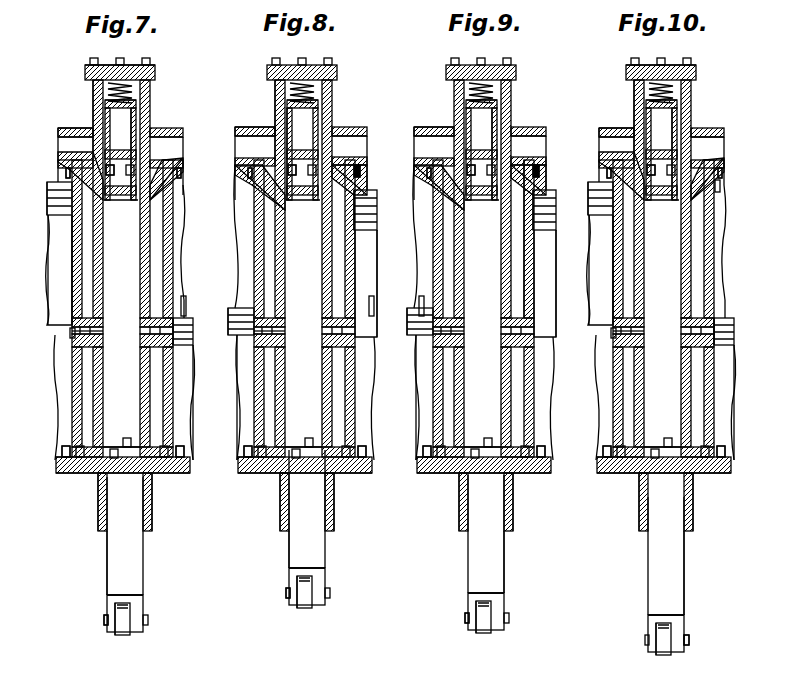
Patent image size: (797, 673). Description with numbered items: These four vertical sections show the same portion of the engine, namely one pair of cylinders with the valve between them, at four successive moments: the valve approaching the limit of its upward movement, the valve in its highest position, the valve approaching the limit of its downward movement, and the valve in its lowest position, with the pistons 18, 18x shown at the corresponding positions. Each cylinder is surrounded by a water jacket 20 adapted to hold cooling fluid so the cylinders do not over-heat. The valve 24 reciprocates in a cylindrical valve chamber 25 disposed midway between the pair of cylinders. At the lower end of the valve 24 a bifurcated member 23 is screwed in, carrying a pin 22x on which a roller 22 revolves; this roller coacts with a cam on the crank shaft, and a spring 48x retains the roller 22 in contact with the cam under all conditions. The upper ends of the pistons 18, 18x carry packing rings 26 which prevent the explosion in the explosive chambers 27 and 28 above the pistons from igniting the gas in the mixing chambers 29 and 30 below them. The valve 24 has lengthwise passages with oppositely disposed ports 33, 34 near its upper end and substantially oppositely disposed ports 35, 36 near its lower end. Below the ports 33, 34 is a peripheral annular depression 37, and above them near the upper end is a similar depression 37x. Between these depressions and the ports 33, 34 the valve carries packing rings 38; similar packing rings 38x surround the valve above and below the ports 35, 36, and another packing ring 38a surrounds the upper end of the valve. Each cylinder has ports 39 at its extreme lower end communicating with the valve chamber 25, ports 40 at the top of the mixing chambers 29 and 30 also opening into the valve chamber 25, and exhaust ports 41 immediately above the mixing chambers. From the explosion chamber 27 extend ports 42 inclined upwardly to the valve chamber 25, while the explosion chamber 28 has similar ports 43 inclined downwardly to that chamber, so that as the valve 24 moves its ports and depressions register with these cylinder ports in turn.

In FIG. 7, the piston 18 is at (50, 268).
In FIG. 8, the piston 18 is at (237, 432).
In FIG. 9, the piston 18 is at (556, 264).
In FIG. 10, the piston 18 is at (592, 262).
In FIG. 7, the piston 18x is at (192, 416).
In FIG. 8, the piston 18x is at (377, 240).
In FIG. 9, the piston 18x is at (556, 238).
In FIG. 10, the piston 18x is at (735, 370).
In FIG. 7, the water jacket 20 is at (60, 142).
In FIG. 8, the water jacket 20 is at (232, 144).
In FIG. 9, the water jacket 20 is at (540, 144).
In FIG. 10, the water jacket 20 is at (597, 142).
In FIG. 7, the roller 22 is at (130, 638).
In FIG. 8, the roller 22 is at (312, 608).
In FIG. 9, the roller 22 is at (492, 635).
In FIG. 10, the roller 22 is at (657, 633).
In FIG. 7, the pin 22x is at (103, 620).
In FIG. 8, the pin 22x is at (285, 593).
In FIG. 9, the pin 22x is at (463, 605).
In FIG. 10, the pin 22x is at (689, 641).
In FIG. 7, the bifurcated member 23 is at (182, 190).
In FIG. 8, the bifurcated member 23 is at (325, 578).
In FIG. 9, the bifurcated member 23 is at (504, 607).
In FIG. 10, the bifurcated member 23 is at (684, 622).
In FIG. 7, the valve 24 is at (107, 571).
In FIG. 8, the valve 24 is at (289, 554).
In FIG. 9, the valve 24 is at (504, 562).
In FIG. 10, the valve 24 is at (684, 565).
In FIG. 7, the cylindrical valve chamber 25 is at (95, 90).
In FIG. 8, the cylindrical valve chamber 25 is at (275, 82).
In FIG. 9, the cylindrical valve chamber 25 is at (525, 420).
In FIG. 10, the cylindrical valve chamber 25 is at (632, 86).
In FIG. 7, the packing rings 26 is at (47, 200).
In FIG. 8, the packing rings 26 is at (378, 208).
In FIG. 9, the packing rings 26 is at (410, 338).
In FIG. 10, the packing rings 26 is at (588, 200).
In FIG. 7, the explosive chamber 27 is at (58, 172).
In FIG. 8, the explosive chamber 27 is at (235, 190).
In FIG. 9, the explosive chamber 27 is at (420, 190).
In FIG. 10, the explosive chamber 27 is at (600, 176).
In FIG. 7, the explosive chamber 28 is at (182, 172).
In FIG. 8, the explosive chamber 28 is at (232, 168).
In FIG. 9, the explosive chamber 28 is at (540, 168).
In FIG. 10, the explosive chamber 28 is at (598, 168).
In FIG. 7, the mixing chamber 29 is at (58, 442).
In FIG. 8, the mixing chamber 29 is at (240, 468).
In FIG. 9, the mixing chamber 29 is at (551, 450).
In FIG. 10, the mixing chamber 29 is at (600, 442).
In FIG. 7, the mixing chamber 30 is at (188, 470).
In FIG. 8, the mixing chamber 30 is at (362, 420).
In FIG. 9, the mixing chamber 30 is at (543, 412).
In FIG. 10, the mixing chamber 30 is at (732, 460).
In FIG. 7, the port 33 is at (62, 228).
In FIG. 8, the port 33 is at (282, 150).
In FIG. 9, the port 33 is at (462, 148).
In FIG. 10, the port 33 is at (615, 228).
In FIG. 7, the port 34 is at (160, 148).
In FIG. 8, the port 34 is at (330, 140).
In FIG. 9, the port 34 is at (508, 140).
In FIG. 10, the port 34 is at (720, 200).
In FIG. 7, the port 35 is at (98, 478).
In FIG. 8, the port 35 is at (280, 478).
In FIG. 9, the port 35 is at (459, 478).
In FIG. 10, the port 35 is at (639, 478).
In FIG. 7, the port 36 is at (152, 490).
In FIG. 8, the port 36 is at (357, 448).
In FIG. 9, the port 36 is at (513, 472).
In FIG. 10, the port 36 is at (693, 485).
In FIG. 7, the peripheral annular depression 37 is at (120, 225).
In FIG. 8, the peripheral annular depression 37 is at (302, 200).
In FIG. 9, the peripheral annular depression 37 is at (481, 220).
In FIG. 10, the peripheral annular depression 37 is at (661, 245).
In FIG. 7, the peripheral annular depression 37x is at (150, 115).
In FIG. 8, the peripheral annular depression 37x is at (282, 105).
In FIG. 9, the peripheral annular depression 37x is at (505, 115).
In FIG. 10, the peripheral annular depression 37x is at (680, 135).
In FIG. 7, the packing rings 38 is at (126, 128).
In FIG. 8, the packing rings 38 is at (330, 110).
In FIG. 9, the packing rings 38 is at (484, 150).
In FIG. 10, the packing rings 38 is at (662, 185).
In FIG. 7, the packing ring 38a is at (135, 105).
In FIG. 8, the packing ring 38a is at (312, 70).
In FIG. 9, the packing ring 38a is at (462, 105).
In FIG. 10, the packing ring 38a is at (680, 120).
In FIG. 7, the packing rings 38x is at (126, 446).
In FIG. 8, the packing rings 38x is at (298, 445).
In FIG. 9, the packing rings 38x is at (484, 445).
In FIG. 10, the packing rings 38x is at (664, 445).
In FIG. 7, the ports 39 is at (60, 466).
In FIG. 8, the ports 39 is at (268, 468).
In FIG. 9, the ports 39 is at (448, 468).
In FIG. 10, the ports 39 is at (603, 460).
In FIG. 7, the ports 40 is at (60, 345).
In FIG. 8, the ports 40 is at (325, 345).
In FIG. 9, the ports 40 is at (505, 345).
In FIG. 10, the ports 40 is at (680, 337).
In FIG. 7, the exhaust ports 41 is at (188, 302).
In FIG. 8, the exhaust ports 41 is at (375, 302).
In FIG. 9, the exhaust ports 41 is at (418, 300).
In FIG. 7, the ports 42 is at (82, 128).
In FIG. 8, the ports 42 is at (258, 127).
In FIG. 9, the ports 42 is at (428, 128).
In FIG. 10, the ports 42 is at (628, 128).
In FIG. 8, the ports 43 is at (360, 180).
In FIG. 9, the ports 43 is at (525, 145).
In FIG. 10, the ports 43 is at (718, 192).
In FIG. 7, the spring 48x is at (130, 63).
In FIG. 10, the spring 48x is at (655, 60).